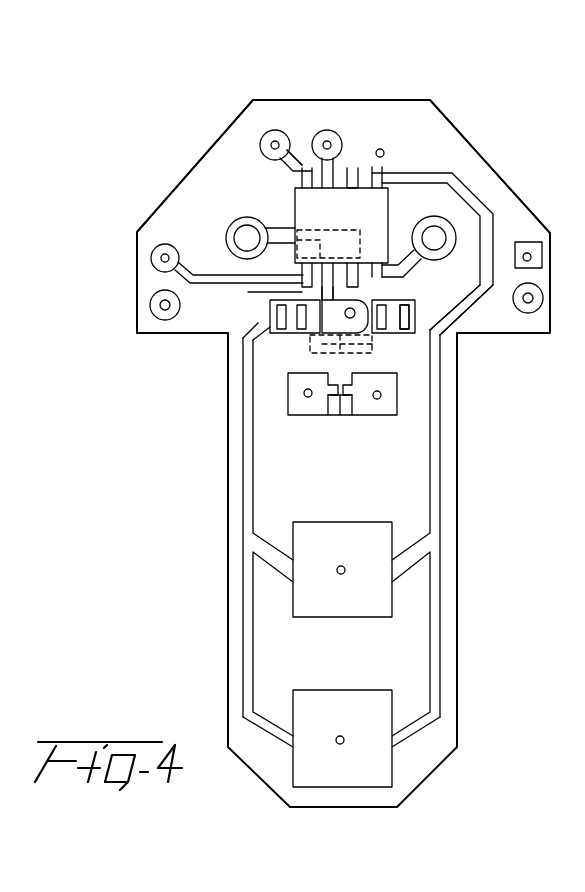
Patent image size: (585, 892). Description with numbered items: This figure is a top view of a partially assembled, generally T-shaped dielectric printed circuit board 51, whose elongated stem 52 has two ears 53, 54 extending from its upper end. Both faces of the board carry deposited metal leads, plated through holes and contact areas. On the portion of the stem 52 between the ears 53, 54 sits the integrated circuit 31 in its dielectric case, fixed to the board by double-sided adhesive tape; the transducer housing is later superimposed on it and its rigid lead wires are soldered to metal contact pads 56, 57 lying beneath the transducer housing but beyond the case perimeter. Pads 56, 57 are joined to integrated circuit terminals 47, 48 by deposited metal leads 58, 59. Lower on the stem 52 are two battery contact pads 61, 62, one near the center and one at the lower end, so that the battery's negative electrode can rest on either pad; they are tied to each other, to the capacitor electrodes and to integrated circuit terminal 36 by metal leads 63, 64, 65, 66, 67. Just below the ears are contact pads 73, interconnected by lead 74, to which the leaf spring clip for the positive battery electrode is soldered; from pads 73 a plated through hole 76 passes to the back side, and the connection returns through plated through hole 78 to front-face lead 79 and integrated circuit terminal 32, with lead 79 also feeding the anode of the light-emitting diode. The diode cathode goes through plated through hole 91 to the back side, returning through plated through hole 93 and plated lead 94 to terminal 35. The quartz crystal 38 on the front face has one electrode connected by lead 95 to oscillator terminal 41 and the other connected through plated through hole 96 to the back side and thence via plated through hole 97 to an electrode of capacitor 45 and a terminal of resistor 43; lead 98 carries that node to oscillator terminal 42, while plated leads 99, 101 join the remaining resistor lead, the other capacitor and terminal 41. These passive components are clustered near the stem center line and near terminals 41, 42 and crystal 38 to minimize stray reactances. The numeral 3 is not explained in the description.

The mounting hole 3 is at (543, 297).
The integrated circuit 31 is at (303, 208).
The integrated circuit terminal 32 is at (333, 207).
The integrated circuit terminal 35 is at (298, 177).
The integrated circuit terminal 36 is at (385, 168).
The quartz crystal 38 is at (148, 278).
The integrated circuit terminal 41 is at (290, 269).
The integrated circuit terminal 42 is at (332, 263).
The resistor 43 is at (343, 353).
The capacitor 45 is at (392, 324).
The integrated circuit terminal 47 is at (393, 230).
The integrated circuit terminal 48 is at (390, 295).
The printed circuit board 51 is at (470, 440).
The stem 52 is at (410, 509).
The ear 53 is at (192, 167).
The ear 54 is at (503, 178).
The metal contact pad 56 is at (450, 230).
The metal contact pad 57 is at (228, 222).
The metal lead 58 is at (423, 268).
The metal lead 59 is at (277, 232).
The metal pad 61 is at (345, 603).
The metal pad 62 is at (370, 700).
The metal lead 63 is at (250, 598).
The metal lead 64 is at (435, 610).
The metal lead 65 is at (247, 463).
The metal lead 66 is at (432, 485).
The metal lead 67 is at (470, 183).
The metal contact pad 73 is at (303, 407).
The deposited lead 74 is at (339, 398).
The plated through hole 76 is at (381, 398).
The plated through hole 78 is at (326, 129).
The lead 79 is at (336, 170).
The plated through hole 91 is at (537, 243).
The plated through hole 93 is at (268, 132).
The plated lead 94 is at (300, 160).
The lead 95 is at (188, 270).
The plated through hole 96 is at (162, 316).
The plated through hole 97 is at (415, 314).
The lead 98 is at (272, 311).
The plated lead 99 is at (322, 318).
The plated lead 101 is at (259, 292).